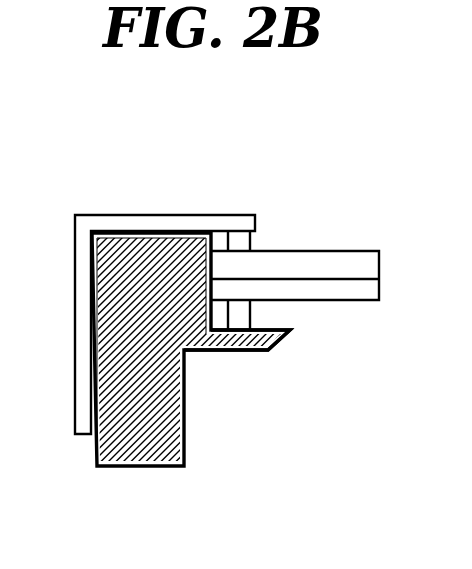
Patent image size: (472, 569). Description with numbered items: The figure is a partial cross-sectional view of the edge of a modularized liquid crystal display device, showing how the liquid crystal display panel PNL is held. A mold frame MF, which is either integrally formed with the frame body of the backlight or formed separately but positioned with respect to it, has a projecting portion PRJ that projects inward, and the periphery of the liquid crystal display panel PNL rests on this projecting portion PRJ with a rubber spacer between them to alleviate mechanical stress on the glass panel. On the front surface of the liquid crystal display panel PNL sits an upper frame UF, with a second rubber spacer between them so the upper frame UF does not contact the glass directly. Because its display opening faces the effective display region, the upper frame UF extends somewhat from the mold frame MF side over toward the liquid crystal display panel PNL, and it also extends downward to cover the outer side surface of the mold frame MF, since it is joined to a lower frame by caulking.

The mold frame MF is at (118, 245).
The upper frame UF is at (80, 265).
The liquid crystal display panel PNL is at (351, 262).
The projecting portion PRJ is at (243, 352).